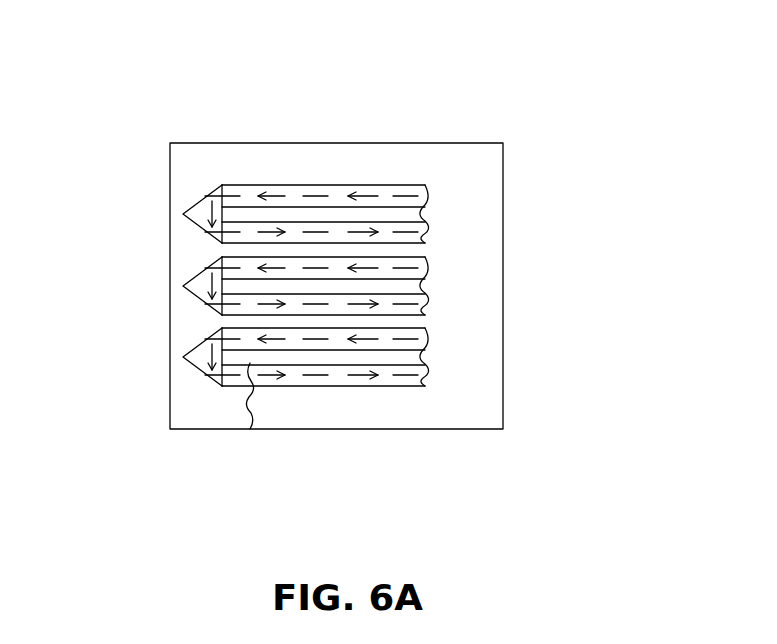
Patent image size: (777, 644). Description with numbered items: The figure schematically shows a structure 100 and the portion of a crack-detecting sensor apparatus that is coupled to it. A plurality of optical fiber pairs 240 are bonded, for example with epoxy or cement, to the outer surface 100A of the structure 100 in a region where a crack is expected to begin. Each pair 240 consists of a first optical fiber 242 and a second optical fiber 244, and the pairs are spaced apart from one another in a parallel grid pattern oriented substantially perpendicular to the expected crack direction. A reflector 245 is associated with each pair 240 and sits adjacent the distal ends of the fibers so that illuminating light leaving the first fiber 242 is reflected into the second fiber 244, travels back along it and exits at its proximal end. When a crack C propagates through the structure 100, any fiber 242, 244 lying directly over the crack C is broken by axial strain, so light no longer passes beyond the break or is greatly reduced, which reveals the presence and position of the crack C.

The structure 100 is at (492, 112).
The outer surface 100A is at (275, 158).
The optical fiber pair 240 is at (382, 248).
The first optical fiber 242 is at (430, 196).
The second optical fiber 244 is at (430, 232).
The reflector 245 is at (196, 212).
The crack C is at (250, 412).